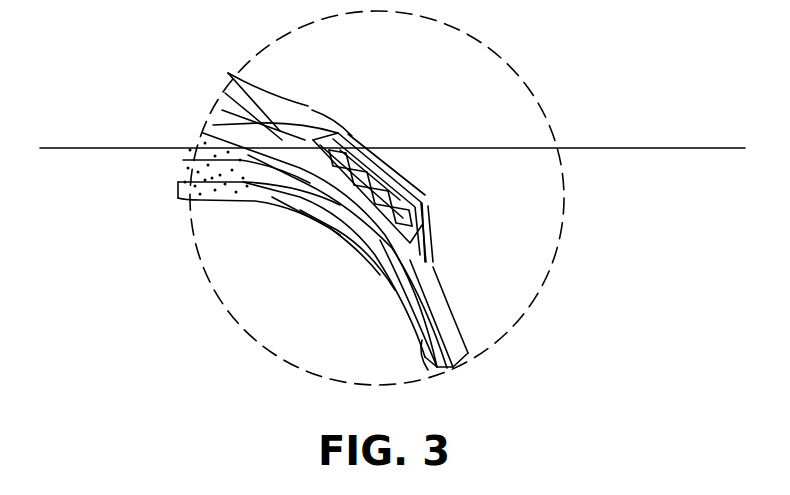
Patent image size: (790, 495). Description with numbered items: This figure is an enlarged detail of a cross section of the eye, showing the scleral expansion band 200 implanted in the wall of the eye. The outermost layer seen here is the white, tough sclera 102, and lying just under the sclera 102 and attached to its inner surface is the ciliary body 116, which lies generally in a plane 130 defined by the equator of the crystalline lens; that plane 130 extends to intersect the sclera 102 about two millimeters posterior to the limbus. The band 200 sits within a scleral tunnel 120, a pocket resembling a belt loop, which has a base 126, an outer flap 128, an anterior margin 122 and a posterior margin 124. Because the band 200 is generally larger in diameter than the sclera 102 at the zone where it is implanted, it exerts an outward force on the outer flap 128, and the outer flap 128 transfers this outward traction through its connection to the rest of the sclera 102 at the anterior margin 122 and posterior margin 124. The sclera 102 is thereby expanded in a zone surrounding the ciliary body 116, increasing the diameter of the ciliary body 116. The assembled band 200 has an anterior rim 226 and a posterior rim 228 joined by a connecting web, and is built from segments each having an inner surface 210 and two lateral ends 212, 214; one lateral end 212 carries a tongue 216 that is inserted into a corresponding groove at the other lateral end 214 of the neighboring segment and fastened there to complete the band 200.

The sclera 102 is at (458, 335).
The ciliary body 116 is at (212, 200).
The scleral tunnel 120 is at (382, 158).
The anterior margin 122 is at (318, 140).
The posterior margin 124 is at (435, 257).
The base 126 is at (330, 215).
The outer flap 128 is at (377, 150).
The plane 130 is at (612, 147).
The scleral band 200 is at (400, 181).
The inner surface 210 is at (178, 187).
The lateral end 212 is at (431, 215).
The lateral end 214 is at (375, 198).
The tongue 216 is at (183, 160).
The anterior rim 226 is at (213, 125).
The posterior rim 228 is at (412, 233).